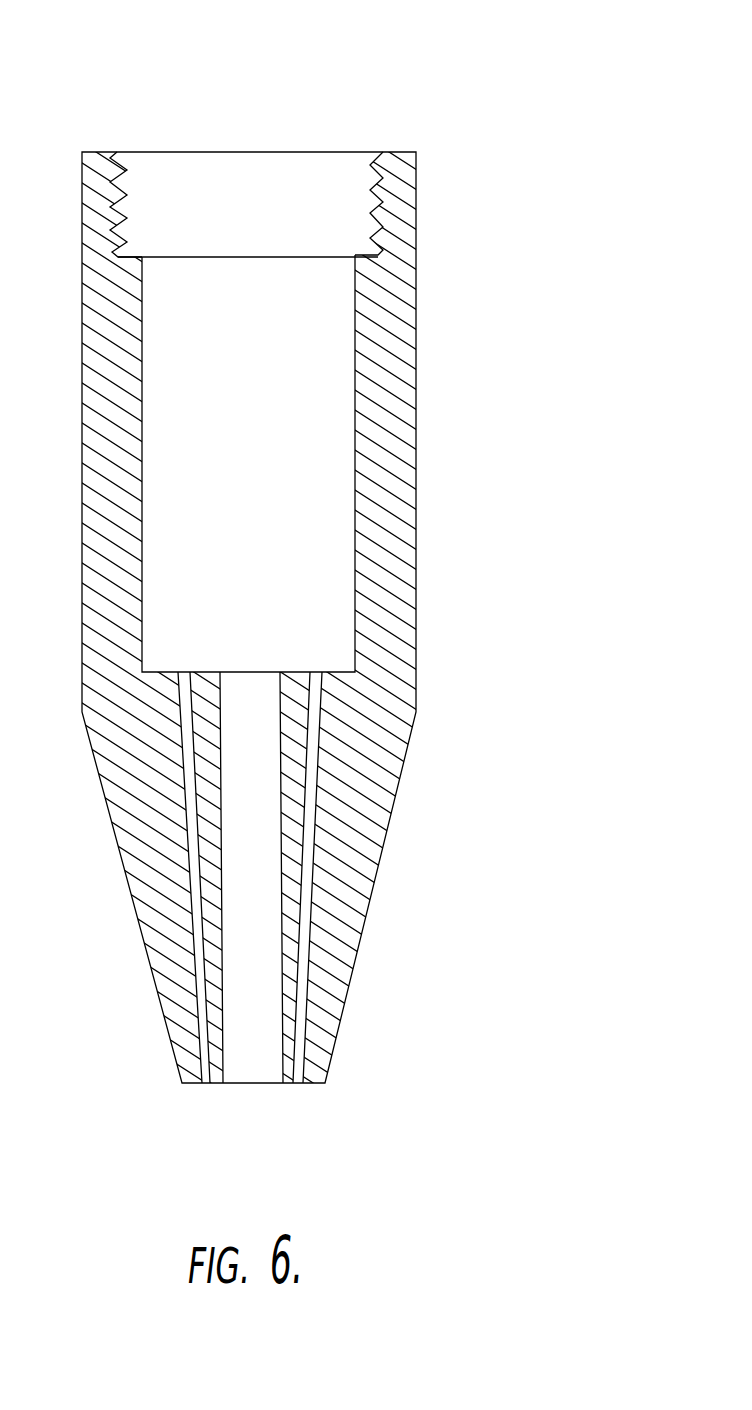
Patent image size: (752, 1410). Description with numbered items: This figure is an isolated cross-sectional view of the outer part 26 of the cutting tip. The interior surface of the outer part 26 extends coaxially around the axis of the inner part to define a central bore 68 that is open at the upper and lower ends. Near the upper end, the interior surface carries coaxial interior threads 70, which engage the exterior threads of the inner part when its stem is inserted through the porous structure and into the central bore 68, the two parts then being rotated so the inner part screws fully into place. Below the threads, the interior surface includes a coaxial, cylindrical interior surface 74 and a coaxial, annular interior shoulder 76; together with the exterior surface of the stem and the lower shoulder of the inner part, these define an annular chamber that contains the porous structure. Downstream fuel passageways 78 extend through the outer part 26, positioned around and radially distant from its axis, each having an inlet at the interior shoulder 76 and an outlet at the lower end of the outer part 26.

The outer part 26 is at (566, 126).
The central bore 68 is at (243, 296).
The interior threads 70 is at (122, 193).
The cylindrical interior surface 74 is at (355, 478).
The interior shoulder 76 is at (297, 673).
The downstream fuel passageways 78 is at (182, 677).